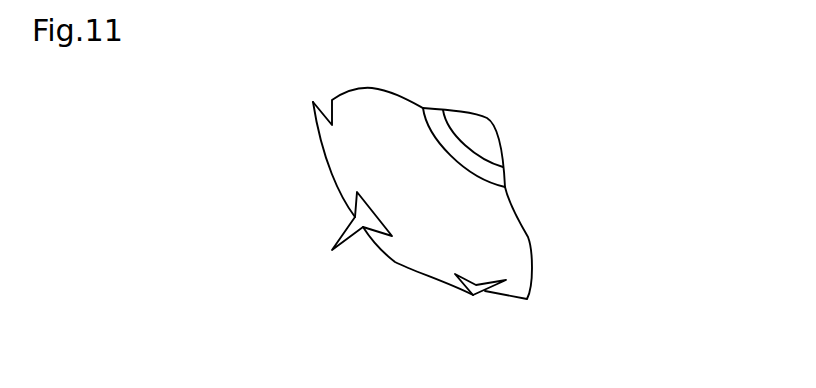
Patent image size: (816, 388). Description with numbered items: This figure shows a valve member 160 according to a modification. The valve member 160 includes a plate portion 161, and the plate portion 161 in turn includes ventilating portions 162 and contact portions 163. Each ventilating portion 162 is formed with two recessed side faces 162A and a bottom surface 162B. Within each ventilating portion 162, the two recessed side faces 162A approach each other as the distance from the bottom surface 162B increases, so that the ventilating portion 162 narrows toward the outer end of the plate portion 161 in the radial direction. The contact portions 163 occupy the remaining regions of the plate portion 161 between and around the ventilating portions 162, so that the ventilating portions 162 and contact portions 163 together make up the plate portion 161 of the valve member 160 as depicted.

The valve member 160 is at (427, 220).
The plate portion 161 is at (397, 116).
The ventilating portion 162 is at (376, 278).
The recessed side face 162A is at (333, 249).
The bottom surface 162B is at (477, 284).
The contact portion 163 is at (326, 160).